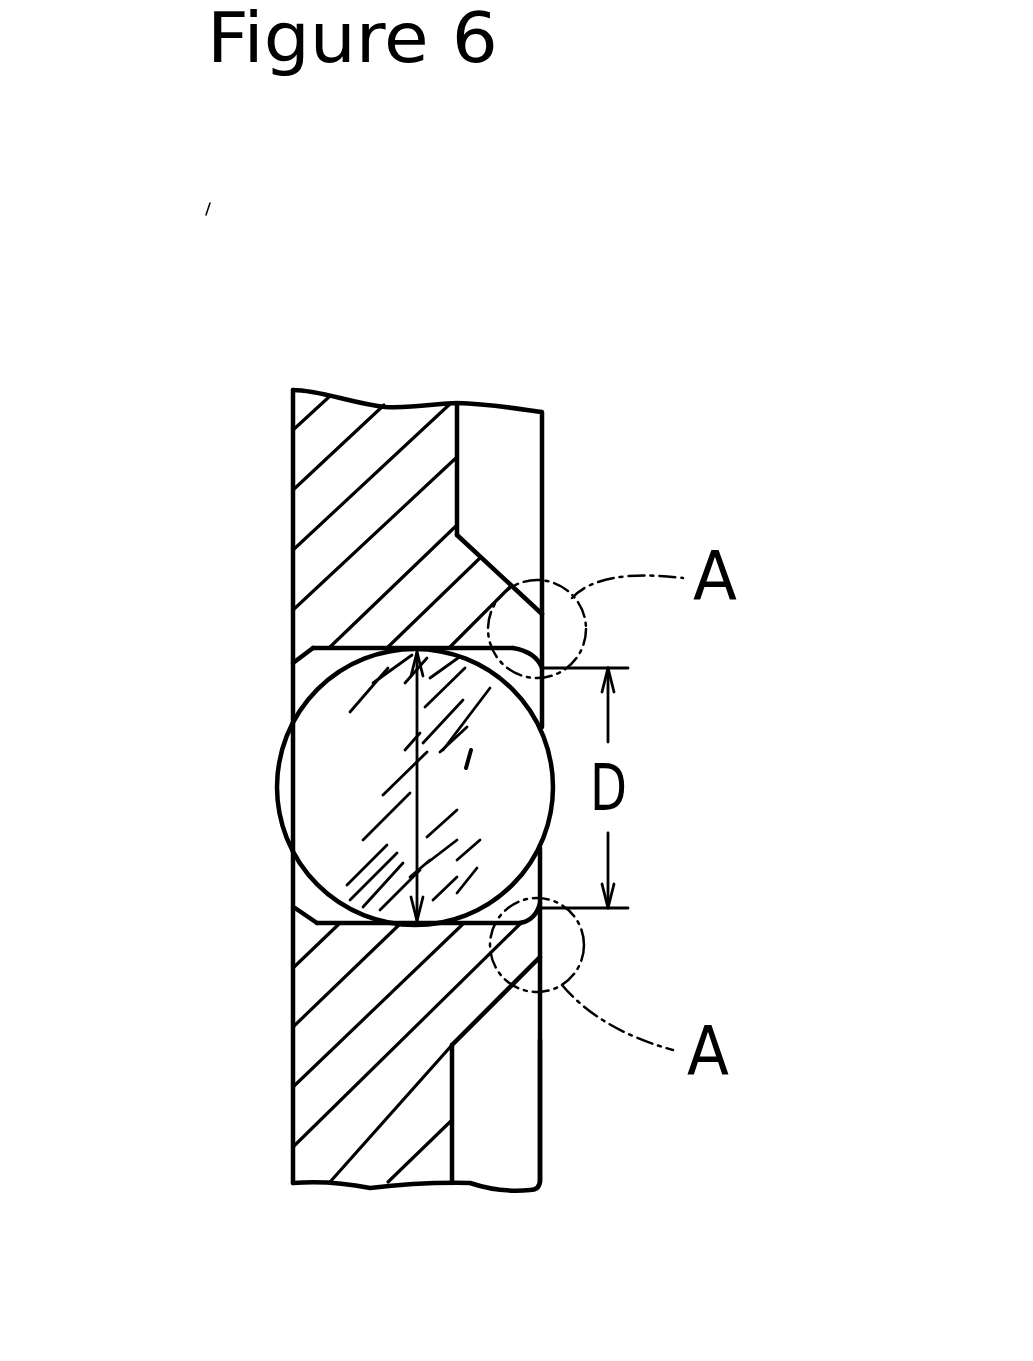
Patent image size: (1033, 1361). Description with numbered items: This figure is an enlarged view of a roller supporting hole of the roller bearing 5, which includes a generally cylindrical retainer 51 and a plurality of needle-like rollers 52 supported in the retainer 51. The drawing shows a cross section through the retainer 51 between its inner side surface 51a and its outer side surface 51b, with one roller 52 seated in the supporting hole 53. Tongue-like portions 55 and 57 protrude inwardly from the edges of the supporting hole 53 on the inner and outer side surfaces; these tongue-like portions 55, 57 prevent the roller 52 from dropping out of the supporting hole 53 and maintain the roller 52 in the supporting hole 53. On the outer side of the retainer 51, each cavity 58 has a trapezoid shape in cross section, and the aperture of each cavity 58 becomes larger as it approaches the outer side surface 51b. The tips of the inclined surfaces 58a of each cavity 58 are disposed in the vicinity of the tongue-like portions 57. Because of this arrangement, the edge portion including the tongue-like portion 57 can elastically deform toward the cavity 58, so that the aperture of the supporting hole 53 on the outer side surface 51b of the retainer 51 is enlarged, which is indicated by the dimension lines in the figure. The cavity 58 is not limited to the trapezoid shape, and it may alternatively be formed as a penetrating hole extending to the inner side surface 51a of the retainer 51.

The roller bearing 5 is at (568, 356).
The retainer 51 is at (316, 479).
The inner side surface 51a is at (290, 1128).
The outer side surface 51b is at (538, 1152).
The needle-like roller 52 is at (290, 811).
The supporting hole 53 is at (313, 685).
The tongue-like portion 55 is at (302, 648).
The tongue-like portion 57 is at (545, 640).
The cavity 58 is at (505, 450).
The inclined surface 58a is at (467, 543).